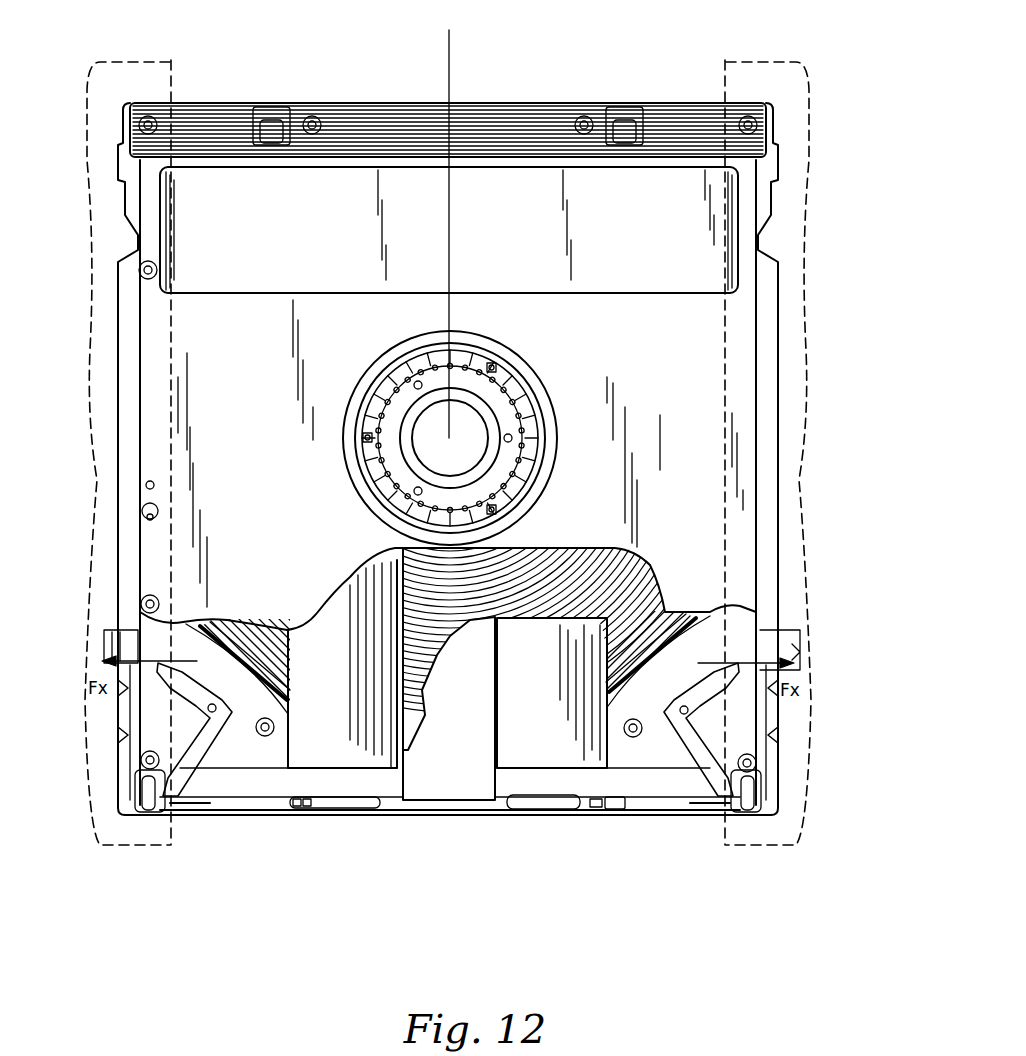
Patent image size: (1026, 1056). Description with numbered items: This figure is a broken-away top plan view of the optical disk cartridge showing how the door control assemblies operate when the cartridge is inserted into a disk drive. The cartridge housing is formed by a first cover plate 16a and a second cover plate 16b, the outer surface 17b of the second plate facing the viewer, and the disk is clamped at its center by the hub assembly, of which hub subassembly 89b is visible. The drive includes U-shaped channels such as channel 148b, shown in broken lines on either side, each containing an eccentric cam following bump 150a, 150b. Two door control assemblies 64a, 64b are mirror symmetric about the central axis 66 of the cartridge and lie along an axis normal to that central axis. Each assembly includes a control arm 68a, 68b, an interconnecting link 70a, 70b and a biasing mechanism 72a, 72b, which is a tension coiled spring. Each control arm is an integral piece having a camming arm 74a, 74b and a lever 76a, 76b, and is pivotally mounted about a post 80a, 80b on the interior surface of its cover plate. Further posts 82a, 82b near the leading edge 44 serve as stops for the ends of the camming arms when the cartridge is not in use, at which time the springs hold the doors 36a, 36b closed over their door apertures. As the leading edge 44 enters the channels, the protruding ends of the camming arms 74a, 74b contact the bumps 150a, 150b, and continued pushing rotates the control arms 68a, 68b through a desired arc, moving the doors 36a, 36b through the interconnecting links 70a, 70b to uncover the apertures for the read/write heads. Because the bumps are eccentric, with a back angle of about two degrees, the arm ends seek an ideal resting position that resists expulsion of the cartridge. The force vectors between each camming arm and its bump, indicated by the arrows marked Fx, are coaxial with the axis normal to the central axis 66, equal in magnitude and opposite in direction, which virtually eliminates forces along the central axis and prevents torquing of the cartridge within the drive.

The U-shaped channel 148b is at (170, 62).
The central axis 66 is at (449, 62).
The second cover plate 16b is at (779, 215).
The first cover plate 16a is at (778, 732).
The hub subassembly 89b is at (521, 356).
The surface 17b is at (686, 399).
The cam following bump 150a is at (104, 640).
The cam following bump 150b is at (793, 638).
The camming arm 74a is at (177, 680).
The camming arm 74b is at (718, 680).
The control arm 68a is at (182, 713).
The control arm 68b is at (679, 744).
The post 82a is at (147, 750).
The post 82b is at (757, 763).
The post 80a is at (284, 719).
The post 80b is at (624, 732).
The door control assembly 64a is at (190, 815).
The door control assembly 64b is at (707, 815).
The lever 76a is at (190, 748).
The lever 76b is at (713, 748).
The interconnecting link 70a is at (298, 780).
The interconnecting link 70b is at (640, 798).
The biasing mechanism 72a is at (525, 829).
The biasing mechanism 72b is at (320, 831).
The leading edge 44 is at (390, 830).
The door 36a is at (355, 650).
The door 36b is at (539, 755).